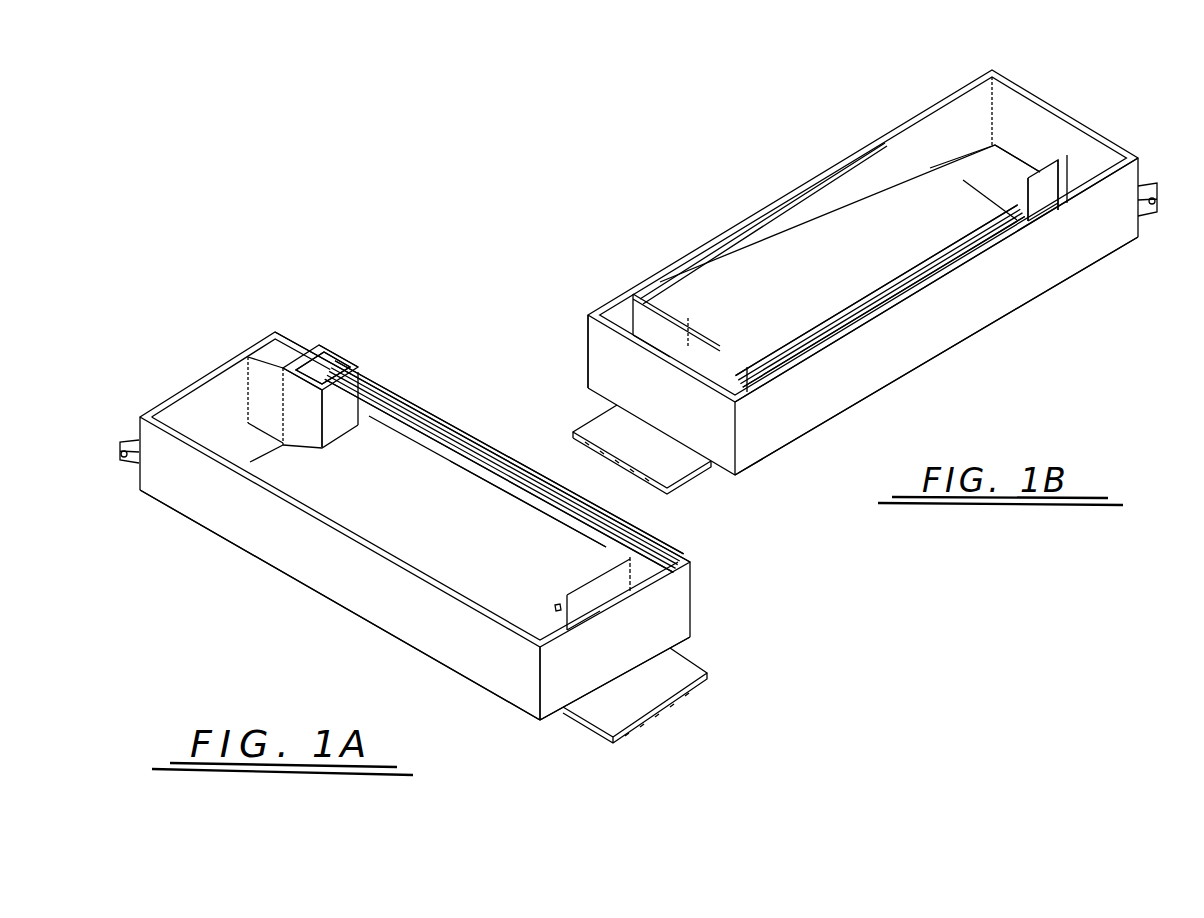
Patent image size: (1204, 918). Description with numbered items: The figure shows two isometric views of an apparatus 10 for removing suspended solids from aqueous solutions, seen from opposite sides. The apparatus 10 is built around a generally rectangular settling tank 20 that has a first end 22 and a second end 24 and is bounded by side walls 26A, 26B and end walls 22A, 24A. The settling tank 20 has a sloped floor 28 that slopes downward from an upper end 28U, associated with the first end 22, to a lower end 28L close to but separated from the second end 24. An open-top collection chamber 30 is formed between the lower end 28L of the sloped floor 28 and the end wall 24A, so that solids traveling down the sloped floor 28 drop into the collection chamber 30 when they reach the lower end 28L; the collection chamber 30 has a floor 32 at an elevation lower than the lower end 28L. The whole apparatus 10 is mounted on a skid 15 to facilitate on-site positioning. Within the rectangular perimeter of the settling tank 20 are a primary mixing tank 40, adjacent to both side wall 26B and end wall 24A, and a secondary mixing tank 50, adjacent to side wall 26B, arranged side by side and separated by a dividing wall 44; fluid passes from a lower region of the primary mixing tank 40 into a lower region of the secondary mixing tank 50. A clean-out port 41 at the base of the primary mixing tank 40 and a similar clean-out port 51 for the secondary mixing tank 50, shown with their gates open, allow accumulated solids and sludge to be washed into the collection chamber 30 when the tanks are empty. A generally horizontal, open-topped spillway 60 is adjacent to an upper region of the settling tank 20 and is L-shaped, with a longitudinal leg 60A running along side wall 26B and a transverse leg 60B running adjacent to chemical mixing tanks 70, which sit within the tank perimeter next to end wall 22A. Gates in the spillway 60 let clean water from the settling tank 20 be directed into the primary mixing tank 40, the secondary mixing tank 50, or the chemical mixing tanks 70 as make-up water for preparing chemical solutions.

In FIG. 1A, the apparatus 10 is at (233, 228).
In FIG. 1B, the apparatus 10 is at (783, 128).
In FIG. 1A, the skid 15 is at (697, 668).
In FIG. 1B, the skid 15 is at (576, 432).
In FIG. 1A, the settling tank 20 is at (358, 487).
In FIG. 1B, the settling tank 20 is at (860, 236).
In FIG. 1A, the first end 22 is at (468, 689).
In FIG. 1B, the first end 22 is at (766, 469).
In FIG. 1A, the end wall 22A is at (596, 646).
In FIG. 1B, the end wall 22A is at (613, 372).
In FIG. 1A, the second end 24 is at (145, 392).
In FIG. 1B, the second end 24 is at (1119, 262).
In FIG. 1A, the end wall 24A is at (208, 405).
In FIG. 1B, the end wall 24A is at (1027, 133).
In FIG. 1A, the side wall 26A is at (368, 583).
In FIG. 1B, the side wall 26A is at (932, 140).
In FIG. 1A, the side wall 26B is at (381, 428).
In FIG. 1B, the side wall 26B is at (963, 310).
In FIG. 1A, the sloped floor 28 is at (437, 507).
In FIG. 1B, the sloped floor 28 is at (782, 292).
In FIG. 1A, the lower end 28L is at (270, 456).
In FIG. 1B, the lower end 28L is at (983, 176).
In FIG. 1A, the upper end 28U is at (587, 553).
In FIG. 1A, the collection chamber 30 is at (243, 429).
In FIG. 1B, the collection chamber 30 is at (997, 166).
In FIG. 1A, the collection chamber floor 32 is at (239, 444).
In FIG. 1B, the collection chamber floor 32 is at (1007, 180).
In FIG. 1A, the primary mixing tank 40 is at (286, 350).
In FIG. 1B, the primary mixing tank 40 is at (1095, 160).
In FIG. 1A, the clean-out port 41 is at (272, 434).
In FIG. 1A, the dividing wall 44 is at (306, 375).
In FIG. 1B, the dividing wall 44 is at (1052, 178).
In FIG. 1A, the secondary mixing tank 50 is at (318, 392).
In FIG. 1B, the secondary mixing tank 50 is at (1040, 163).
In FIG. 1A, the clean-out port 51 is at (296, 440).
In FIG. 1A, the spillway 60 is at (371, 388).
In FIG. 1B, the spillway 60 is at (967, 252).
In FIG. 1A, the longitudinal leg 60A is at (613, 527).
In FIG. 1B, the longitudinal leg 60A is at (900, 283).
In FIG. 1A, the transverse leg 60B is at (577, 577).
In FIG. 1B, the transverse leg 60B is at (686, 327).
In FIG. 1A, the chemical mixing tanks 70 is at (547, 623).
In FIG. 1B, the chemical mixing tanks 70 is at (642, 330).